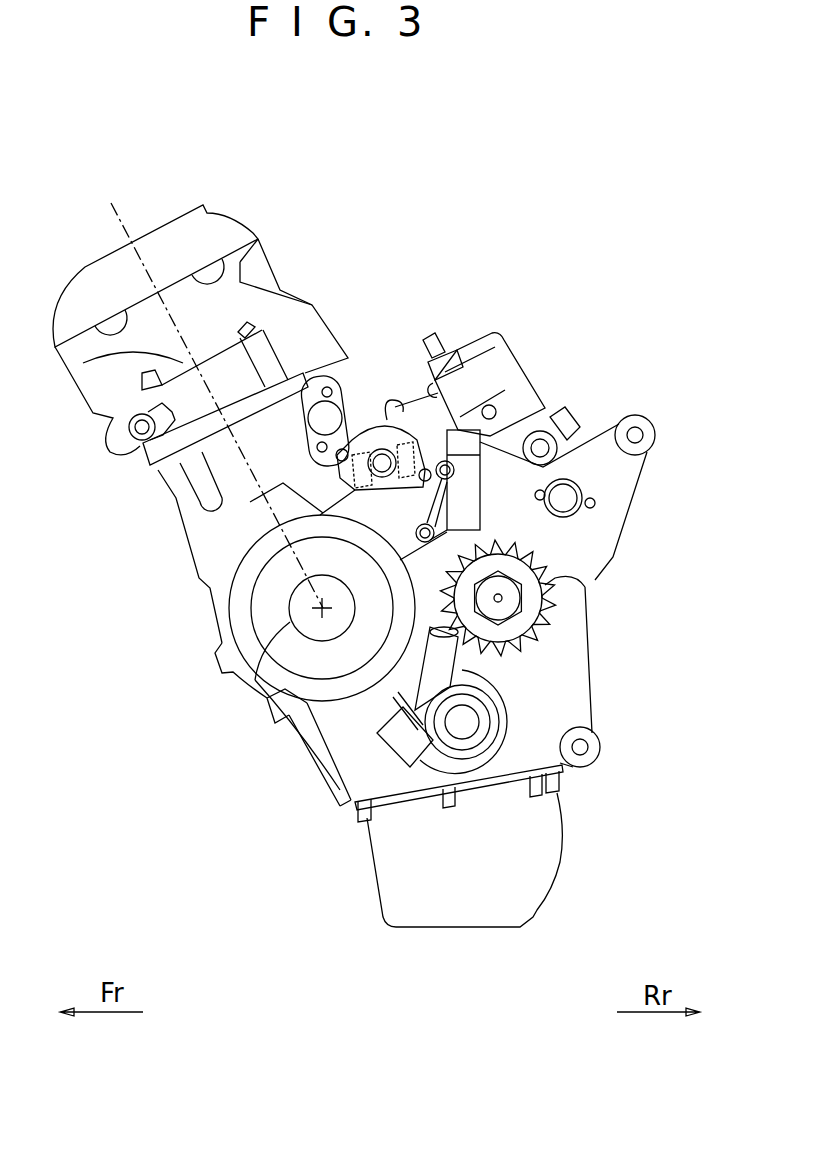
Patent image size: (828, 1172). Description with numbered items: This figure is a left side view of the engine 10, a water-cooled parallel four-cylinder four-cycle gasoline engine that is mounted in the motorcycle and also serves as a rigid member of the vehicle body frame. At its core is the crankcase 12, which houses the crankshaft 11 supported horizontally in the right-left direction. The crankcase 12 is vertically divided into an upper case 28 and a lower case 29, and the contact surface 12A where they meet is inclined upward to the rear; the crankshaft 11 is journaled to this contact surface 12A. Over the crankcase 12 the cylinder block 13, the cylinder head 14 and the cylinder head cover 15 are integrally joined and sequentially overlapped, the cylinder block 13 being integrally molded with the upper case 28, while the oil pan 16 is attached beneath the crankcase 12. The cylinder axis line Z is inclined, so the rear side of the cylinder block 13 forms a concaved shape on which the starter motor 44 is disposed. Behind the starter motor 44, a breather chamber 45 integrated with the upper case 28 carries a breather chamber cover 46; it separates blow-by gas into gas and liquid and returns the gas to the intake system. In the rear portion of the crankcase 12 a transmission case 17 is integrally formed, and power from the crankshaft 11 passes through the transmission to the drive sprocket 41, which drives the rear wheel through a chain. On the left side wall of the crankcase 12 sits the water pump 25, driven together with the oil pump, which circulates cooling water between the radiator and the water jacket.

The engine 10 is at (183, 663).
The crankshaft 11 is at (267, 697).
The crankcase 12 is at (337, 737).
The contact surface 12A is at (418, 560).
The cylinder block 13 is at (212, 530).
The cylinder head 14 is at (110, 420).
The cylinder head cover 15 is at (115, 272).
The oil pan 16 is at (480, 877).
The transmission case 17 is at (548, 668).
The water pump 25 is at (462, 722).
The upper case 28 is at (212, 610).
The lower case 29 is at (262, 695).
The drive sprocket 41 is at (548, 582).
The starter motor 44 is at (375, 443).
The breather chamber 45 is at (590, 427).
The breather chamber cover 46 is at (530, 393).
The cylinder axis line Z is at (162, 250).